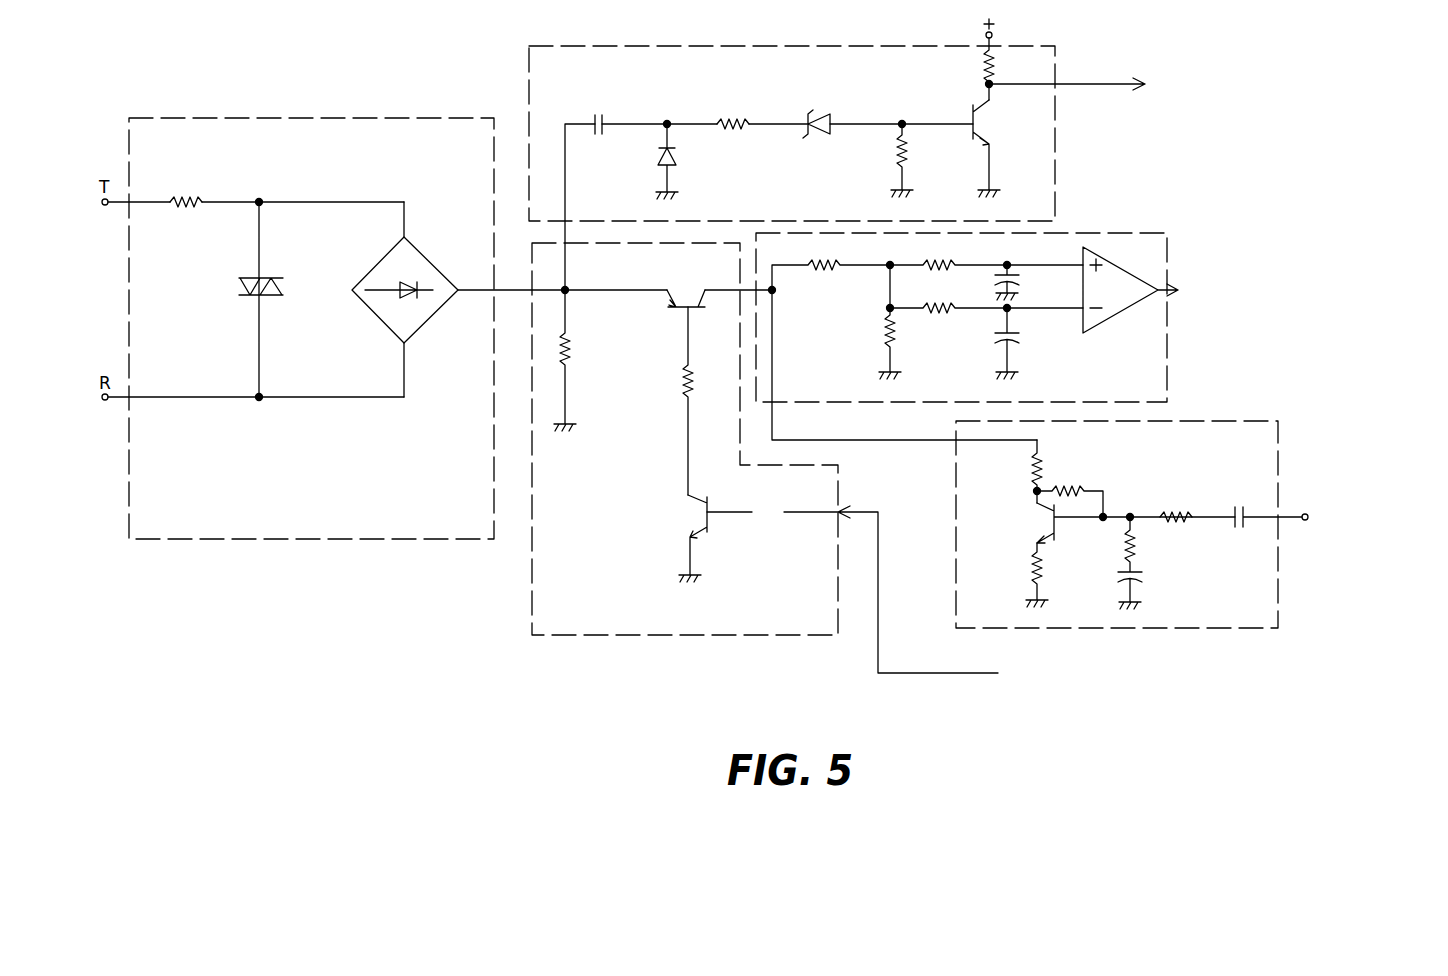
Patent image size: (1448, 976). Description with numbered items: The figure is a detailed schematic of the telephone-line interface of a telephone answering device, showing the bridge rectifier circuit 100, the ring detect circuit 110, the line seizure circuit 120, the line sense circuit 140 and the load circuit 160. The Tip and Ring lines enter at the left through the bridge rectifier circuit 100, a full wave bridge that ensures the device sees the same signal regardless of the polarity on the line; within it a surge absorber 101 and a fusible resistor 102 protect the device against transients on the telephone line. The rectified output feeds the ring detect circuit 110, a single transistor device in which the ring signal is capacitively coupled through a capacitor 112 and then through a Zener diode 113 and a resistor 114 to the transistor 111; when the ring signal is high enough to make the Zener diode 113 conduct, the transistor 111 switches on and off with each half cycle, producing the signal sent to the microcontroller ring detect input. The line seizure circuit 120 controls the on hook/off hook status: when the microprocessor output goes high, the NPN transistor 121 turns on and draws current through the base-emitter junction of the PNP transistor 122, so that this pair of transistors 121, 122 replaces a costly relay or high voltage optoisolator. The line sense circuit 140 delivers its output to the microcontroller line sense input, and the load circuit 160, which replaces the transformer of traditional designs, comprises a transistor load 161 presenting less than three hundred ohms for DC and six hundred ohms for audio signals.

The bridge rectifier circuit 100 is at (392, 118).
The surge absorber 101 is at (280, 278).
The fusible resistor 102 is at (183, 199).
The ring detect circuit 110 is at (1055, 190).
The transistor 111 is at (970, 110).
The capacitor 112 is at (597, 113).
The Zener diode 113 is at (826, 121).
The resistor 114 is at (734, 120).
The line seizure circuit 120 is at (552, 635).
The NPN transistor 121 is at (694, 530).
The PNP transistor 122 is at (667, 304).
The line sense circuit 140 is at (1165, 232).
The load circuit 160 is at (1255, 421).
The transistor load 161 is at (1045, 530).